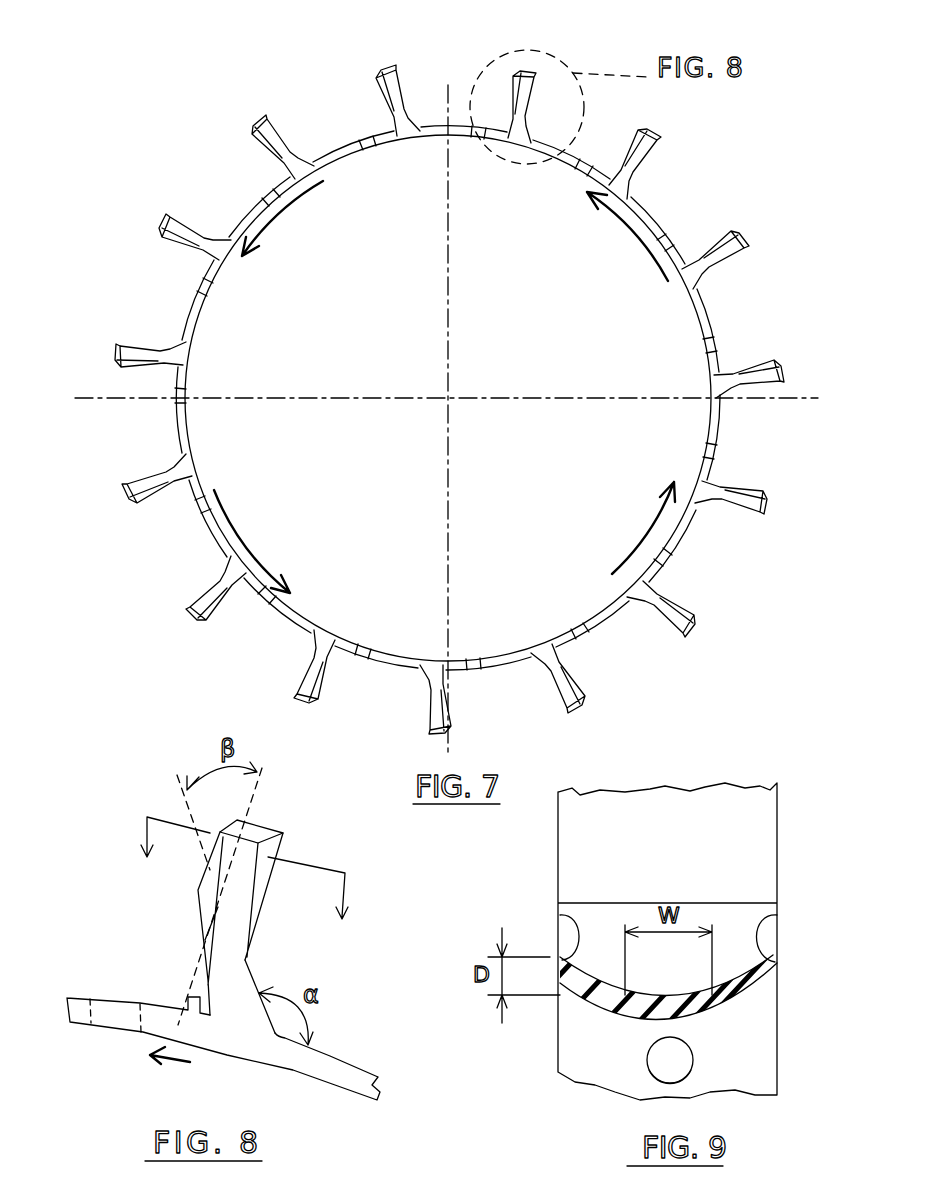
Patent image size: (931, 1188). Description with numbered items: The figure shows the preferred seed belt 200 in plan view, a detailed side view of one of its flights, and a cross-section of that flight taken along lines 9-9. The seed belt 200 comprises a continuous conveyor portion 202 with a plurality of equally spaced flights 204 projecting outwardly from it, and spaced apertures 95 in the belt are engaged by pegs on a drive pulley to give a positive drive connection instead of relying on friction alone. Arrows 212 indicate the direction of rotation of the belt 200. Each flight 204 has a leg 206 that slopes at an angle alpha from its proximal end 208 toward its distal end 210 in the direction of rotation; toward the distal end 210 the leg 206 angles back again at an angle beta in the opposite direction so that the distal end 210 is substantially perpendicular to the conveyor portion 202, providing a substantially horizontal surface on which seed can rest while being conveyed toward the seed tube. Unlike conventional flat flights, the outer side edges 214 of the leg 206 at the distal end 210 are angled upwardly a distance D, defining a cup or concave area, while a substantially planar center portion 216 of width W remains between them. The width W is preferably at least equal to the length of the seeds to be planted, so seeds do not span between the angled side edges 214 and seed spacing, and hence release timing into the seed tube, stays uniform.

In FIG. 7, the apertures 95 is at (185, 392).
In FIG. 8, the apertures 95 is at (100, 1032).
In FIG. 9, the apertures 95 is at (653, 1062).
In FIG. 7, the seed belt 200 is at (195, 147).
In FIG. 8, the seed belt 200 is at (162, 991).
In FIG. 7, the conveyor portion 202 is at (206, 329).
In FIG. 9, the conveyor portion 202 is at (576, 847).
In FIG. 7, the flight 204 is at (138, 338).
In FIG. 8, the flight 204 is at (198, 948).
In FIG. 9, the flight 204 is at (762, 1008).
In FIG. 8, the leg 206 is at (243, 977).
In FIG. 9, the leg 206 is at (735, 913).
In FIG. 8, the proximal end 208 is at (242, 1020).
In FIG. 8, the distal end 210 is at (267, 828).
In FIG. 7, the arrows 212 is at (637, 533).
In FIG. 8, the arrows 212 is at (190, 1063).
In FIG. 9, the side edges 214 is at (772, 920).
In FIG. 9, the center portion 216 is at (688, 952).
In FIG. 8, the section lines 9- 9 is at (240, 868).